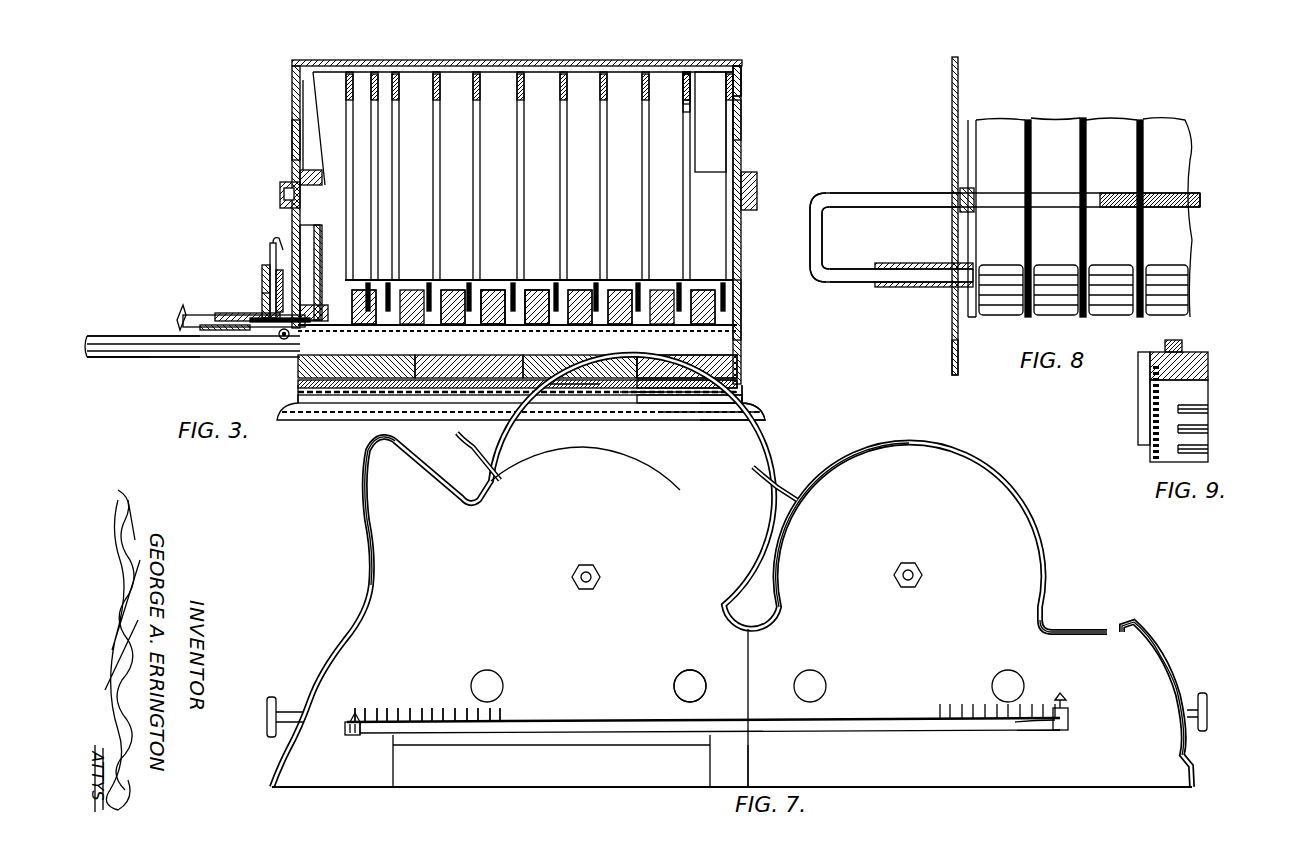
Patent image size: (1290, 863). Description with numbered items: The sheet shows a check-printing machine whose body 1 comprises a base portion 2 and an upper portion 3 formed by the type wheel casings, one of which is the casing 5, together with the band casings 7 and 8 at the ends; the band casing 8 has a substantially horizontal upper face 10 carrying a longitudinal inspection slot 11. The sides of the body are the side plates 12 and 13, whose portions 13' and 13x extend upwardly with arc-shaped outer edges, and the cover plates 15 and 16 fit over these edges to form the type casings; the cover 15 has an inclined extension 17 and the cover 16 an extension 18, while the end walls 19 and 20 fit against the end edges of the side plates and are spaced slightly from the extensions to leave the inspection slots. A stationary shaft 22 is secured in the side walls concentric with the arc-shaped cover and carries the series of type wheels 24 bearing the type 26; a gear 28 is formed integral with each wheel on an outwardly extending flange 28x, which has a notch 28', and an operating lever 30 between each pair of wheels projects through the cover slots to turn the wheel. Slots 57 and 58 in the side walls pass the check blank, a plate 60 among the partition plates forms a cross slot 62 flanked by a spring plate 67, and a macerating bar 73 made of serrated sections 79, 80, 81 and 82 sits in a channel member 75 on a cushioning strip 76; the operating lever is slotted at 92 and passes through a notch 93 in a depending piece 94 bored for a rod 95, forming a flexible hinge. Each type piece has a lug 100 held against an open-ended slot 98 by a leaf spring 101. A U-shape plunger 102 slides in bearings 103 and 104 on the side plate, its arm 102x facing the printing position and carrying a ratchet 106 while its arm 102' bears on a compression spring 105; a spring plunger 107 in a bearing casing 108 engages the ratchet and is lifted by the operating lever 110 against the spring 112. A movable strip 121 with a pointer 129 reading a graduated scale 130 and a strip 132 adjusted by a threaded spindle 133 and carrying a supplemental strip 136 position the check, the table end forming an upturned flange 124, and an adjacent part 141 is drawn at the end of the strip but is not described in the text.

In FIG. 3, the body of the machine 1 is at (757, 394).
In FIG. 7, the body of the machine 1 is at (920, 769).
In FIG. 3, the base portion 2 is at (740, 366).
In FIG. 7, the base portion 2 is at (736, 766).
In FIG. 3, the upper portion 3 is at (742, 292).
In FIG. 7, the upper portion 3 is at (703, 684).
In FIG. 8, the upper portion 3 is at (952, 138).
In FIG. 3, the type wheel casing 5 is at (507, 60).
In FIG. 7, the band casing 7 is at (367, 537).
In FIG. 7, the band casing 8 is at (1128, 622).
In FIG. 7, the horizontal upper face 10 is at (1077, 627).
In FIG. 7, the longitudinal inspection slot 11 is at (1131, 627).
In FIG. 3, the side plate 12 is at (350, 118).
In FIG. 8, the side plate 12 is at (952, 374).
In FIG. 3, the side plate 13 is at (759, 120).
In FIG. 7, the side plate 13 is at (660, 572).
In FIG. 3, the upwardly extending portion of side plate 13x is at (742, 74).
In FIG. 7, the upwardly extending portion of side plate 13x is at (853, 525).
In FIG. 7, the upwardly extending portion of side plate 13' is at (549, 464).
In FIG. 7, the cover plate 15 is at (651, 463).
In FIG. 3, the cover plate 16 is at (727, 62).
In FIG. 7, the cover plate 16 is at (930, 447).
In FIG. 7, the inclined extension 17 is at (440, 474).
In FIG. 7, the extension 18 is at (1050, 630).
In FIG. 7, the end wall 19 is at (373, 577).
In FIG. 7, the end wall 20 is at (1173, 659).
In FIG. 3, the stationary shaft 22 is at (280, 192).
In FIG. 3, the type wheel 24 is at (712, 158).
In FIG. 9, the type wheel 24 is at (1183, 362).
In FIG. 3, the type 26 is at (452, 280).
In FIG. 8, the type 26 is at (1002, 298).
In FIG. 3, the gear 28 is at (695, 66).
In FIG. 9, the gear 28 is at (1123, 413).
In FIG. 3, the flange 28x is at (298, 138).
In FIG. 9, the flange 28x is at (1142, 380).
In FIG. 3, the notch 28' is at (745, 92).
In FIG. 3, the operating lever 30 is at (690, 98).
In FIG. 3, the slot 57 is at (305, 345).
In FIG. 3, the slot 58 is at (743, 334).
In FIG. 3, the plate 60 is at (474, 331).
In FIG. 3, the cross slot 62 is at (540, 288).
In FIG. 3, the spring plate 67 is at (578, 321).
In FIG. 3, the macerating bar 73 is at (740, 358).
In FIG. 3, the channel member 75 is at (745, 407).
In FIG. 3, the cushioning strip 76 is at (573, 382).
In FIG. 3, the section of macerating bar 79 is at (693, 321).
In FIG. 3, the section of macerating bar 80 is at (613, 358).
In FIG. 3, the section of macerating bar 81 is at (510, 363).
In FIG. 3, the section of macerating bar 82 is at (383, 363).
In FIG. 3, the slot 92 is at (640, 397).
In FIG. 3, the notch 93 is at (680, 415).
In FIG. 3, the depending piece 94 is at (737, 418).
In FIG. 3, the rod 95 is at (740, 378).
In FIG. 3, the open ended slot 98 is at (540, 326).
In FIG. 9, the open ended slot 98 is at (1208, 410).
In FIG. 3, the lug 100 is at (492, 283).
In FIG. 3, the leaf spring 101 is at (527, 232).
In FIG. 3, the U-shape plunger 102 is at (241, 299).
In FIG. 8, the U-shape plunger 102 is at (843, 237).
In FIG. 3, the arm of plunger 102x is at (207, 322).
In FIG. 8, the arm of plunger 102x is at (837, 278).
In FIG. 8, the arm of plunger 102' is at (895, 215).
In FIG. 8, the bearing 103 is at (902, 287).
In FIG. 8, the bearing 104 is at (957, 183).
In FIG. 8, the compression spring 105 is at (1202, 199).
In FIG. 3, the ratchet 106 is at (253, 324).
In FIG. 3, the spring plunger 107 is at (262, 293).
In FIG. 3, the bearing casing 108 is at (262, 270).
In FIG. 3, the operating lever 110 is at (272, 243).
In FIG. 3, the spring 112 is at (279, 262).
In FIG. 7, the movable strip 121 is at (363, 738).
In FIG. 7, the upturned flange 124 is at (345, 730).
In FIG. 7, the pointer 129 is at (358, 714).
In FIG. 7, the graduated scale 130 is at (443, 710).
In FIG. 3, the strip 132 is at (127, 336).
In FIG. 7, the strip 132 is at (1070, 730).
In FIG. 3, the threaded spindle 133 is at (287, 343).
In FIG. 7, the supplemental strip 136 is at (1047, 722).
In FIG. 3, the rod end 141 is at (130, 362).